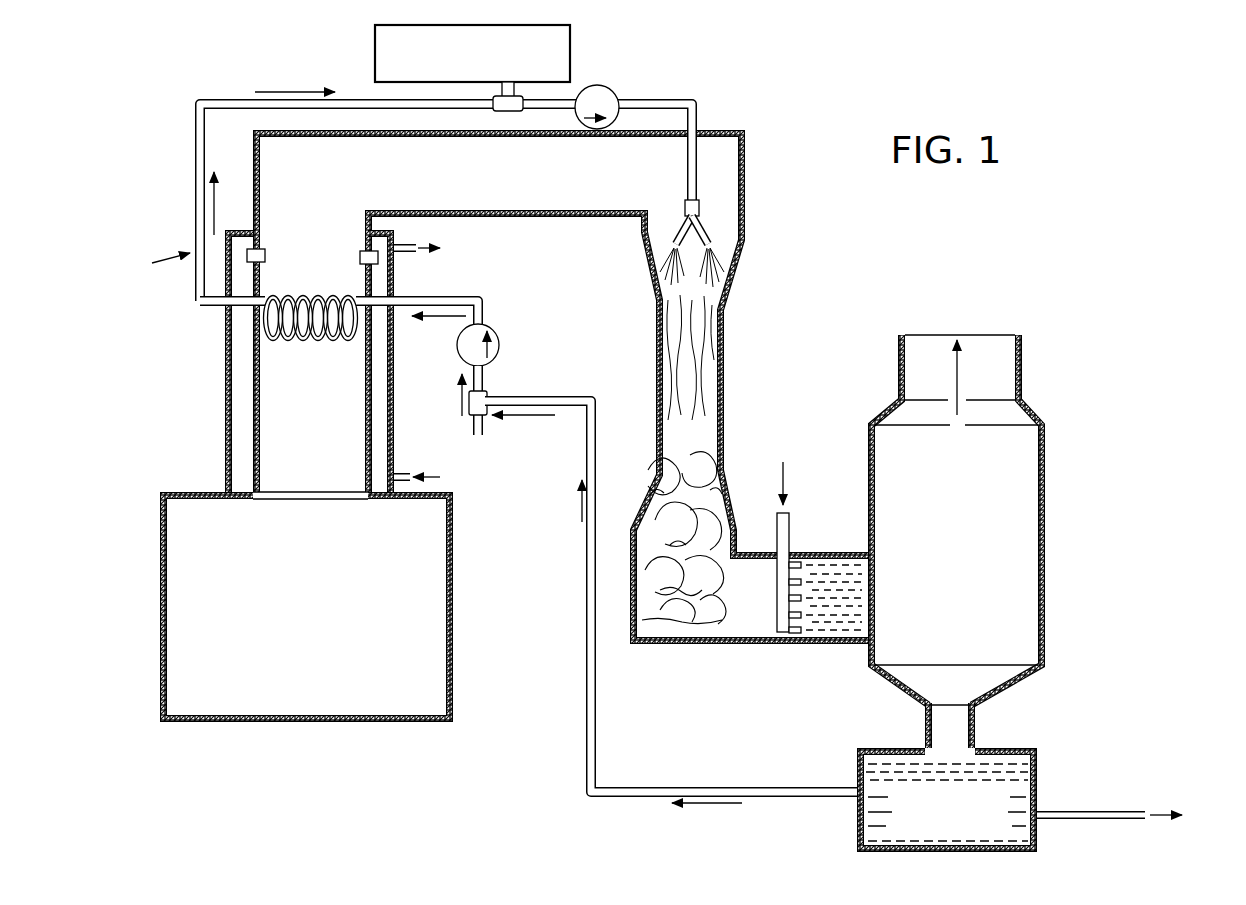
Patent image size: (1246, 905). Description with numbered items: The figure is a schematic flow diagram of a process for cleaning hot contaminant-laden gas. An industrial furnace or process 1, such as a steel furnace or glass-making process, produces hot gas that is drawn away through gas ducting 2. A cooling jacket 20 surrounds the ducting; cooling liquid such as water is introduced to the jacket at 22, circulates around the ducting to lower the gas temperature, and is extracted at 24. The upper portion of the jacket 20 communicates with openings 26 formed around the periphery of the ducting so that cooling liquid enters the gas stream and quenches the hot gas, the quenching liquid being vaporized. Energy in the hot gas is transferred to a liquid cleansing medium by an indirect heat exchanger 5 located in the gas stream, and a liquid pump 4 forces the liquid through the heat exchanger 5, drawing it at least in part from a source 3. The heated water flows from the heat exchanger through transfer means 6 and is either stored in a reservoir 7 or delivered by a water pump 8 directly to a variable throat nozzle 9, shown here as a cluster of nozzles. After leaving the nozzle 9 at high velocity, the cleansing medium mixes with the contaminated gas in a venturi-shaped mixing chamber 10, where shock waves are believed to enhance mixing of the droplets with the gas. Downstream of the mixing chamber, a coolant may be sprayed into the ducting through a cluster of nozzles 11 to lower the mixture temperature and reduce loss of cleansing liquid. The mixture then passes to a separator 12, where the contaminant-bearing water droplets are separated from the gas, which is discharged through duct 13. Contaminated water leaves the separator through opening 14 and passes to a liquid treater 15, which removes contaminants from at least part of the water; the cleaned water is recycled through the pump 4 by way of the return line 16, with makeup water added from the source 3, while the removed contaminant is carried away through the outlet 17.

The industrial furnace or process 1 is at (455, 576).
The gas ducting 2 is at (252, 393).
The source 3 is at (488, 425).
The liquid pump 4 is at (499, 338).
The indirect heat exchanger 5 is at (310, 299).
The transfer means 6 is at (195, 186).
The reservoir 7 is at (375, 52).
The water pump 8 is at (613, 92).
The variable throat nozzle 9 is at (700, 212).
The mixing chamber 10 is at (690, 385).
The cluster of nozzles 11 is at (778, 588).
The separator 12 is at (1045, 492).
The duct 13 is at (980, 373).
The opening 14 is at (978, 732).
The liquid treater 15 is at (870, 748).
The return pipe 16 is at (772, 787).
The contaminant outlet pipe 17 is at (1102, 818).
The cooling jacket 20 is at (228, 349).
The cooling jacket inlet 22 is at (401, 470).
The cooling jacket outlet 24 is at (410, 252).
The openings 26 is at (265, 258).